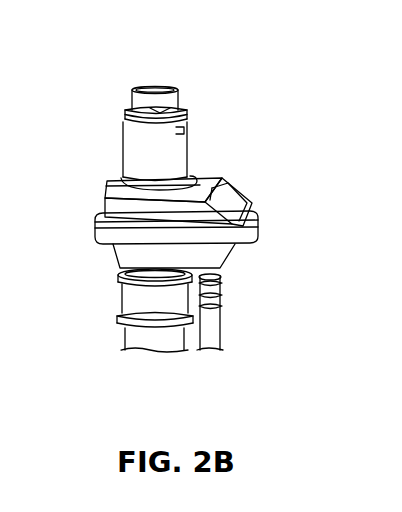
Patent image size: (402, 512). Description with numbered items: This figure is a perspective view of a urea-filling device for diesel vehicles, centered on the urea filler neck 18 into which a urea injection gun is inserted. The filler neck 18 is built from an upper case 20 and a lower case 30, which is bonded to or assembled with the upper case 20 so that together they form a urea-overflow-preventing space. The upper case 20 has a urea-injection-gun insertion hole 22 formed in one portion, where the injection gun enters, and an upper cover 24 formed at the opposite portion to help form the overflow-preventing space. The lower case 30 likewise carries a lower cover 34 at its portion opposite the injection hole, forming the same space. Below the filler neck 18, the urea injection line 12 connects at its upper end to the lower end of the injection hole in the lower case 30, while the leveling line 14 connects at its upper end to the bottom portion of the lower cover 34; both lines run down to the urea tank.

The urea injection line 12 is at (157, 343).
The leveling line 14 is at (213, 332).
The urea filler neck 18 is at (240, 178).
The upper case 20 is at (212, 177).
The urea-injection-gun insertion hole 22 is at (157, 87).
The upper cover 24 is at (237, 200).
The lower case 30 is at (124, 257).
The lower cover 34 is at (225, 253).